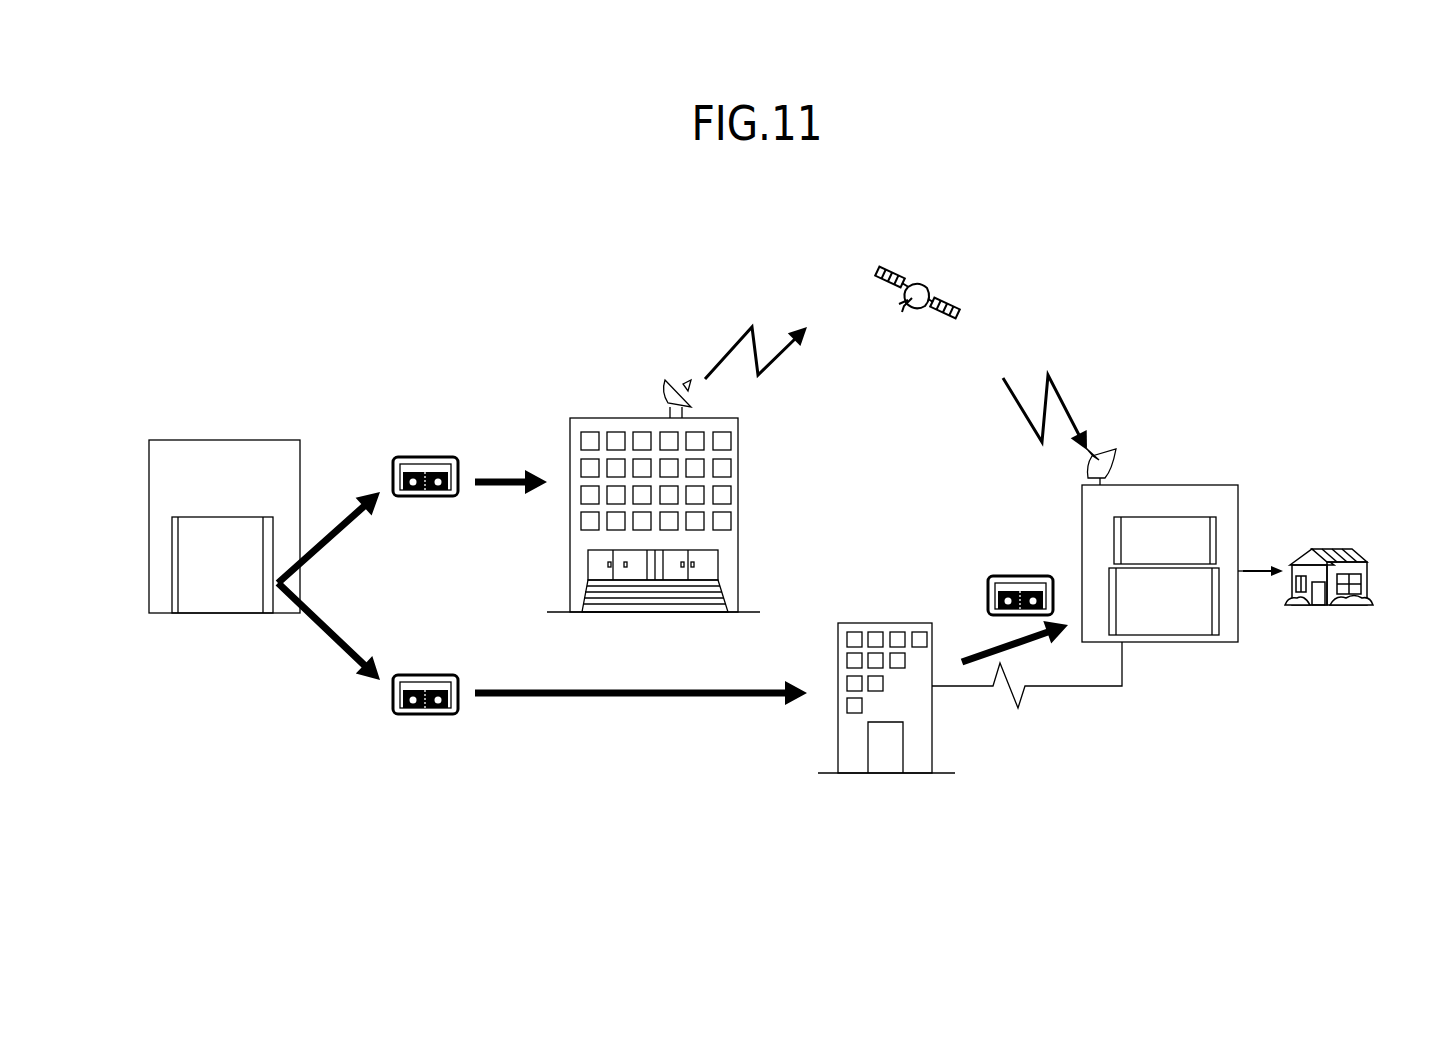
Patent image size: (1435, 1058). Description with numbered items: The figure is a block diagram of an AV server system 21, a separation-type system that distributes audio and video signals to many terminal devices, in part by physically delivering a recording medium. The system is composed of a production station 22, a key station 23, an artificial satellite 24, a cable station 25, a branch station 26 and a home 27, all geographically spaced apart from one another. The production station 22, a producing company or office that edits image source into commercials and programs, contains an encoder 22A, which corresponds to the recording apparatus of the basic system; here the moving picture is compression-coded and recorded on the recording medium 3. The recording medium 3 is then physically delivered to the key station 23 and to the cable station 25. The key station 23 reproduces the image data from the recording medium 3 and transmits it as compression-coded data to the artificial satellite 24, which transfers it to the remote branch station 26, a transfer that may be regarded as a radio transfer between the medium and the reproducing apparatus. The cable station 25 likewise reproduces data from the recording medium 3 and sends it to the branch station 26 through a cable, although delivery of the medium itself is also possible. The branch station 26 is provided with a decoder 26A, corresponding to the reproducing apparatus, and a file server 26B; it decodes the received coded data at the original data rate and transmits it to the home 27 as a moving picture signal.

The AV server system 21 is at (200, 801).
The production station 22 is at (162, 440).
The encoder 22A is at (190, 613).
The recording medium 3 is at (422, 457).
The key station 23 is at (592, 418).
The artificial satellite 24 is at (893, 270).
The cable station 25 is at (862, 775).
The branch station 26 is at (1142, 485).
The decoder 26A is at (1187, 517).
The file server 26B is at (1162, 642).
The home 27 is at (1355, 547).